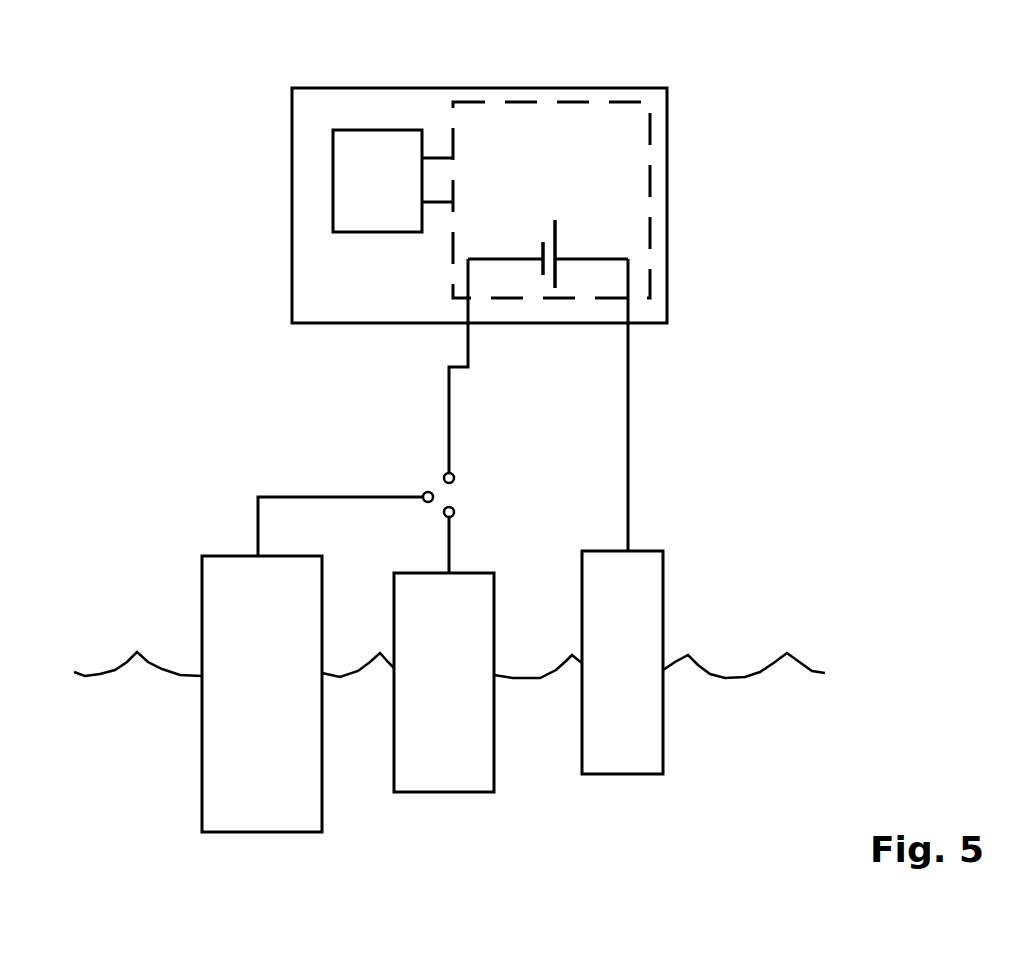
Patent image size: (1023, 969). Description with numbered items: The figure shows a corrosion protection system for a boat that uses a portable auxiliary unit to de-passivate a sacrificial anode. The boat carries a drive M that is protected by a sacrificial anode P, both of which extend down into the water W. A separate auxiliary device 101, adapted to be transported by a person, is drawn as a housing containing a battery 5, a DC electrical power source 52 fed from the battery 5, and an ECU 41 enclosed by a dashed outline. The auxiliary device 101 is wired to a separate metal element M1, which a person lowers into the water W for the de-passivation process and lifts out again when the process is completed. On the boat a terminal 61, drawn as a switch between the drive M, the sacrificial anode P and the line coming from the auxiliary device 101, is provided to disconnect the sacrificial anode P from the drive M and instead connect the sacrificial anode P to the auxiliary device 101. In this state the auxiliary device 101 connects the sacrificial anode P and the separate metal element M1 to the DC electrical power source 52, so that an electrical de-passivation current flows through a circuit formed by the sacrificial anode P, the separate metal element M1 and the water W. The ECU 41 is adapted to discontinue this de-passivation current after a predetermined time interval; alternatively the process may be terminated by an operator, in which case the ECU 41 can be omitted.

The auxiliary device 101 is at (667, 232).
The ECU 41 is at (527, 102).
The battery 5 is at (393, 181).
The DC electrical power source 52 is at (537, 207).
The terminal 61 is at (423, 470).
The drive M is at (262, 694).
The sacrificial anode P is at (444, 682).
The separate metal element M1 is at (622, 662).
The water W is at (736, 677).